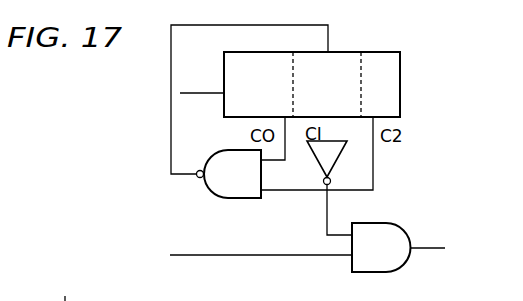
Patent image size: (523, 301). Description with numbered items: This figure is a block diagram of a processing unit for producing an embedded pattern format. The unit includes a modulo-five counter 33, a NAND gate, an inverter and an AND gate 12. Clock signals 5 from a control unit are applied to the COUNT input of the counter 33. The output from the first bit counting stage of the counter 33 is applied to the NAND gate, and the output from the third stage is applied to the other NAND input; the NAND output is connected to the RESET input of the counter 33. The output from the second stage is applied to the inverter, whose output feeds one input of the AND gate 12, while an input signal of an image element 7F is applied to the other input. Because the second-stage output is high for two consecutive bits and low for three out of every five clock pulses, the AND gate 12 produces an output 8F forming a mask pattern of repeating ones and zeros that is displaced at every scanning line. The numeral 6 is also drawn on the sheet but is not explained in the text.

The modulo-5 counter 33 is at (377, 52).
The clock signals 5 is at (202, 86).
The AND gate 12 is at (371, 272).
The output 8F is at (427, 239).
The input signal of an image element 7F is at (261, 245).
The signal line 6 is at (64, 287).